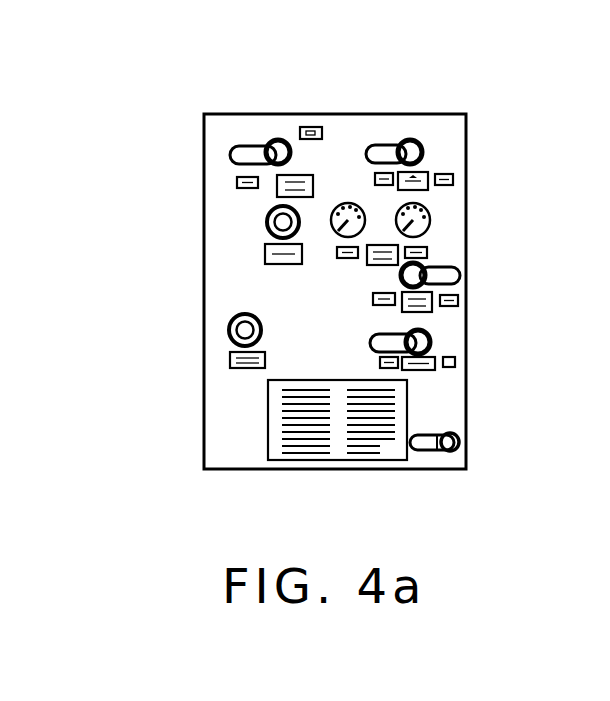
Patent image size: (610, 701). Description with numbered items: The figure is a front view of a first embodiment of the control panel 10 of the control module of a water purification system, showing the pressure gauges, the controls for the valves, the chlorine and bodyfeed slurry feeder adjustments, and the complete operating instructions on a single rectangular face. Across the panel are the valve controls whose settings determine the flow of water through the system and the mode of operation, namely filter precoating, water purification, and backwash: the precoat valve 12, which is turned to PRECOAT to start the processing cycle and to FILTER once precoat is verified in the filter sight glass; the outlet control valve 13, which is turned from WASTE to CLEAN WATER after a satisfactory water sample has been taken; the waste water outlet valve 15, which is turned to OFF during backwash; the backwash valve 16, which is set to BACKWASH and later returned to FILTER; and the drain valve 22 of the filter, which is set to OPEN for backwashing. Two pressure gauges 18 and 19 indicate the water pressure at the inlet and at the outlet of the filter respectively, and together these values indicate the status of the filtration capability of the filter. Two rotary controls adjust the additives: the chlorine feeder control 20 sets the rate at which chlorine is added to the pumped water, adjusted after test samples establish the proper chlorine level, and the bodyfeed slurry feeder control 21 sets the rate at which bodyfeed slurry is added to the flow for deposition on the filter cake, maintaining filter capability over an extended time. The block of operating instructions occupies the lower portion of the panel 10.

The control panel 10 is at (336, 336).
The precoat valve 12 is at (476, 314).
The outlet control valve 13 is at (440, 110).
The waste water outlet valve 15 is at (221, 110).
The backwash valve 16 is at (492, 255).
The pressure gauge 18 is at (376, 128).
The pressure gauge 19 is at (489, 195).
The chlorine feeder control 20 is at (192, 186).
The bodyfeed slurry feeder control 21 is at (173, 305).
The drain valve 22 is at (496, 421).